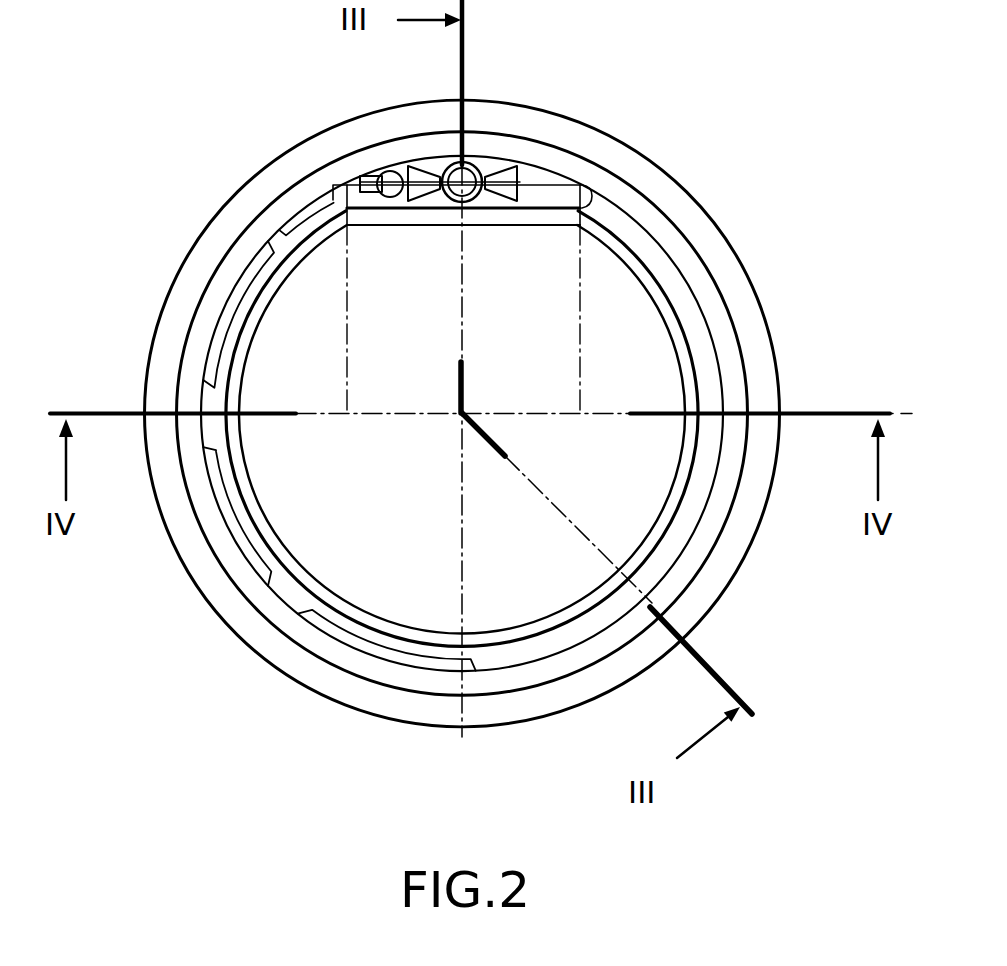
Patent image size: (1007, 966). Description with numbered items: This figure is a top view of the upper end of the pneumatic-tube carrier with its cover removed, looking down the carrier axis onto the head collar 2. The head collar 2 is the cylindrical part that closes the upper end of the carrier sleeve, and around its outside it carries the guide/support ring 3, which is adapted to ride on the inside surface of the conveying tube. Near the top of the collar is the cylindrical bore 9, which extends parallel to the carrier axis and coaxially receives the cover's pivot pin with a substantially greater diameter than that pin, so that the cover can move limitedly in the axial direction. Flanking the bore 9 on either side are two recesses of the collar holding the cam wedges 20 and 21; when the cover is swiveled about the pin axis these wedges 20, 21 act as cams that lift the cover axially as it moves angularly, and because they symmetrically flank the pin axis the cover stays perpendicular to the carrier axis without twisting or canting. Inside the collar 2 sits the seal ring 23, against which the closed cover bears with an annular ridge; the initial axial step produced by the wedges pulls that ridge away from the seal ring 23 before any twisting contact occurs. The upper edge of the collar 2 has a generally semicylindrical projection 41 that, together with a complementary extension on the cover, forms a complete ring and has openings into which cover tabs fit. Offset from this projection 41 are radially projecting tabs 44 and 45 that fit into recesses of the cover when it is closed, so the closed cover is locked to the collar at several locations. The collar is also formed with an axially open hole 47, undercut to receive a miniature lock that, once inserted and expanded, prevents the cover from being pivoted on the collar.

The head collar 2 is at (740, 315).
The guide/support ring 3 is at (762, 378).
The cylindrical bore 9 is at (472, 165).
The cam wedge 20 is at (428, 168).
The cam wedge 21 is at (510, 170).
The seal ring 23 is at (640, 262).
The semicylindrical projection 41 is at (246, 312).
The radially projecting tab 44 is at (284, 232).
The radially projecting tab 45 is at (205, 395).
The axially open hole 47 is at (385, 175).